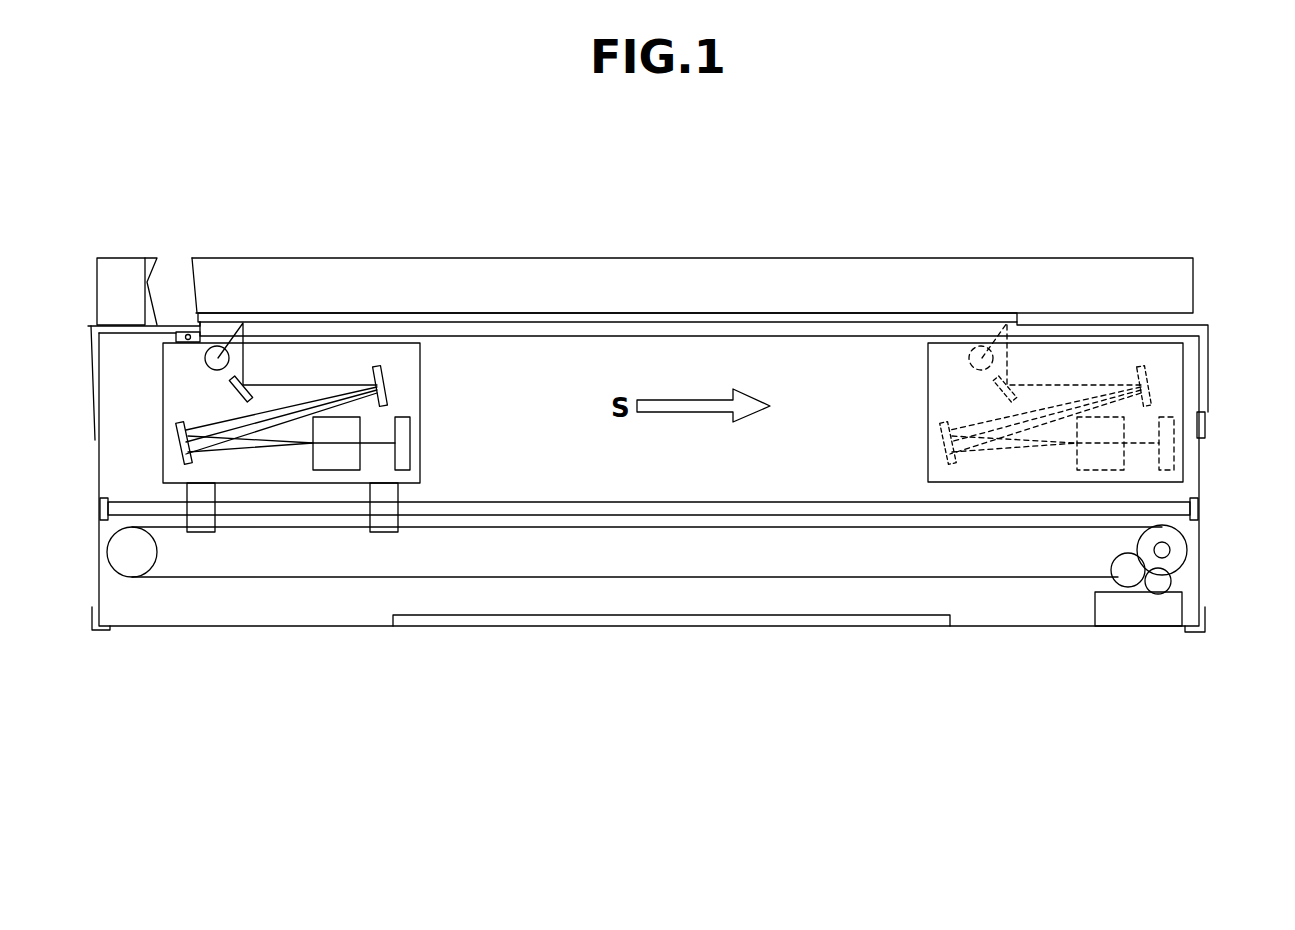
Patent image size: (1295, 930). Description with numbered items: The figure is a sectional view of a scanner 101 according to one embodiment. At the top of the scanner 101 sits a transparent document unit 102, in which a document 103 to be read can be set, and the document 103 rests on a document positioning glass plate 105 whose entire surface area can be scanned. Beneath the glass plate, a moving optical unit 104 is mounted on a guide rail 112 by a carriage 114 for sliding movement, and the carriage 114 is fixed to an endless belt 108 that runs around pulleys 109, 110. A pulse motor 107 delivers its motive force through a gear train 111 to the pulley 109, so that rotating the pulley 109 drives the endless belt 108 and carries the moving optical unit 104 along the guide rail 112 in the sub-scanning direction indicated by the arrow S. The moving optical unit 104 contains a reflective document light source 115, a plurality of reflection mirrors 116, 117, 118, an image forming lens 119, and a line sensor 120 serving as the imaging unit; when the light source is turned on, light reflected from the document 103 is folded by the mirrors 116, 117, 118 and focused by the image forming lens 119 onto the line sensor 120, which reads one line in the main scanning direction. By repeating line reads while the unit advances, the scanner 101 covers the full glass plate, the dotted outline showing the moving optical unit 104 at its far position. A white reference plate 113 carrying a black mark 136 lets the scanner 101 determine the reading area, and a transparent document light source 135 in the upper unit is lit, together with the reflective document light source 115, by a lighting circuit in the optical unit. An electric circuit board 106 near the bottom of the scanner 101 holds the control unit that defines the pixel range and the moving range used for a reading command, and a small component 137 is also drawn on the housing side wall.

The main body housing 101 is at (262, 630).
The platen cover 102 is at (808, 310).
The platen glass 103 is at (487, 317).
The scanning unit 104 is at (337, 357).
The original document 105 is at (733, 325).
The bottom plate 106 is at (660, 628).
The drive motor 107 is at (1140, 610).
The drive belt 108 is at (300, 577).
The drive pulley 109 is at (1180, 550).
The idler pulley 110 is at (137, 565).
The reduction gear 111 is at (1123, 580).
The guide rail 112 is at (685, 498).
The reference position 113 is at (204, 332).
The slider 114 is at (202, 523).
The lamp 115 is at (207, 363).
The first mirror 116 is at (238, 392).
The second mirror 117 is at (385, 380).
The third mirror 118 is at (176, 448).
The lens 119 is at (350, 460).
The image sensor 120 is at (410, 428).
The pressing plate 135 is at (625, 273).
The hinge 136 is at (190, 332).
The position sensor 137 is at (1205, 422).